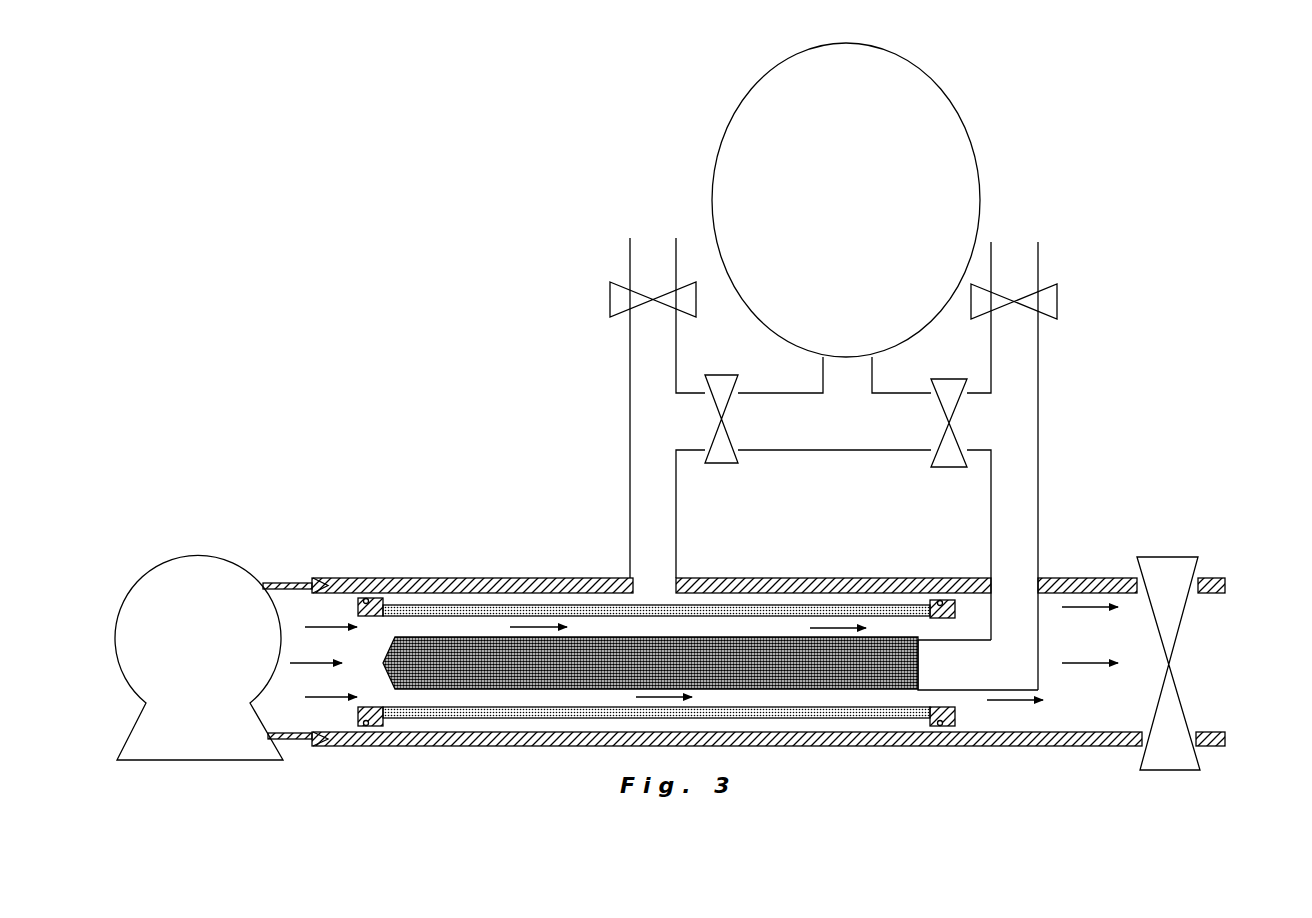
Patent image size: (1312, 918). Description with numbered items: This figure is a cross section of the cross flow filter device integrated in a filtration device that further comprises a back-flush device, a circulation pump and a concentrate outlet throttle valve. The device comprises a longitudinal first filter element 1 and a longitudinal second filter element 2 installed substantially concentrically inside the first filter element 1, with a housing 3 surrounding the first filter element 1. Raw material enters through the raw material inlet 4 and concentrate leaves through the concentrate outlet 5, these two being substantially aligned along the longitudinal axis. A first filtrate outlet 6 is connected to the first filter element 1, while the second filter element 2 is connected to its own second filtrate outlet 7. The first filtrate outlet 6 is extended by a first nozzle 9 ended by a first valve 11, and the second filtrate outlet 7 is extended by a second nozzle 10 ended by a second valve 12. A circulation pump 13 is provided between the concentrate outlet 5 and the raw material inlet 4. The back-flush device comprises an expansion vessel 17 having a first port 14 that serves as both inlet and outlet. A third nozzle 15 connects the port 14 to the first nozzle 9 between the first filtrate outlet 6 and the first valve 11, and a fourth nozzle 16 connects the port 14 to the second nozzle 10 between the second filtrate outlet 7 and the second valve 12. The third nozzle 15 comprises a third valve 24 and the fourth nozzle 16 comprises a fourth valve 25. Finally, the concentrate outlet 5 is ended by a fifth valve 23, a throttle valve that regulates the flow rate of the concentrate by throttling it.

The first filter element 1 is at (727, 608).
The second filter element 2 is at (812, 688).
The housing 3 is at (801, 584).
The raw material inlet 4 is at (367, 674).
The concentrate outlet 5 is at (1077, 651).
The first filtrate outlet 6 is at (662, 595).
The second filtrate outlet 7 is at (947, 672).
The first nozzle 9 is at (678, 548).
The second nozzle 10 is at (1042, 523).
The first valve 11 is at (612, 290).
The second valve 12 is at (1047, 305).
The circulation pump 13 is at (212, 672).
The first port 14 is at (861, 384).
The third nozzle 15 is at (763, 450).
The fourth nozzle 16 is at (900, 450).
The expansion vessel 17 is at (922, 168).
The fifth valve 23 is at (1163, 572).
The third valve 24 is at (728, 392).
The fourth valve 25 is at (950, 395).